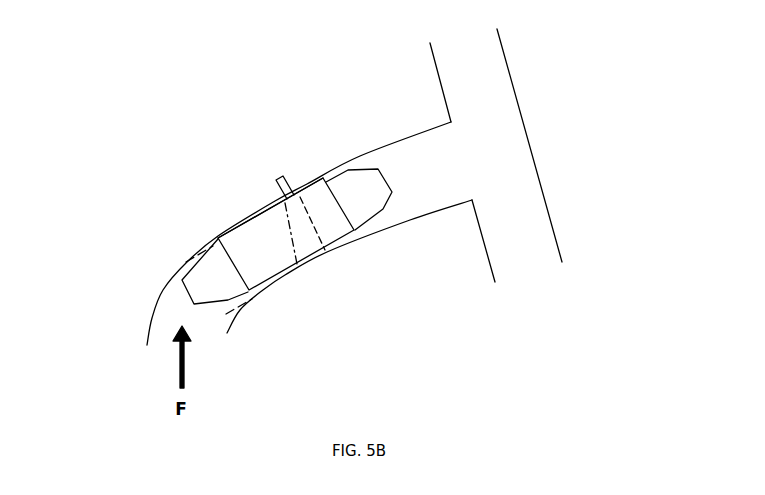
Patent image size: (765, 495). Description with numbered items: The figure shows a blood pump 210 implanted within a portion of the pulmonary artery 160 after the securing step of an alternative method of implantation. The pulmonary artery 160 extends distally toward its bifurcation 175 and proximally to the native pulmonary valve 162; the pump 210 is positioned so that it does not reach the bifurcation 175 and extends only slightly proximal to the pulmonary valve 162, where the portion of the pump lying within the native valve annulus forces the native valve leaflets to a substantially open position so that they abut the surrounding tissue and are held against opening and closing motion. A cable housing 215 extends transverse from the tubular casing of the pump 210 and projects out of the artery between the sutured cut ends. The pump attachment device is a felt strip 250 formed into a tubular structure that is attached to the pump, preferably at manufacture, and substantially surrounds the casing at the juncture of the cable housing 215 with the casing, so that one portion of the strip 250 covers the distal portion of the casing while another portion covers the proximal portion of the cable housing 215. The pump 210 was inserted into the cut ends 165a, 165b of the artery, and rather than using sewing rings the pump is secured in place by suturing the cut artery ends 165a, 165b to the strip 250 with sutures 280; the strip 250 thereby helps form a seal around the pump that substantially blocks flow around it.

The pulmonary artery 160 is at (380, 106).
The pulmonary valve 162 is at (203, 240).
The cut end of the pulmonary artery 165a is at (276, 202).
The cut end of the pulmonary artery 165b is at (307, 180).
The bifurcation of the pulmonary artery 175 is at (495, 157).
The blood pump 210 is at (370, 207).
The cable housing 215 is at (281, 177).
The felt strip 250 is at (352, 225).
The sutures 280 is at (325, 257).